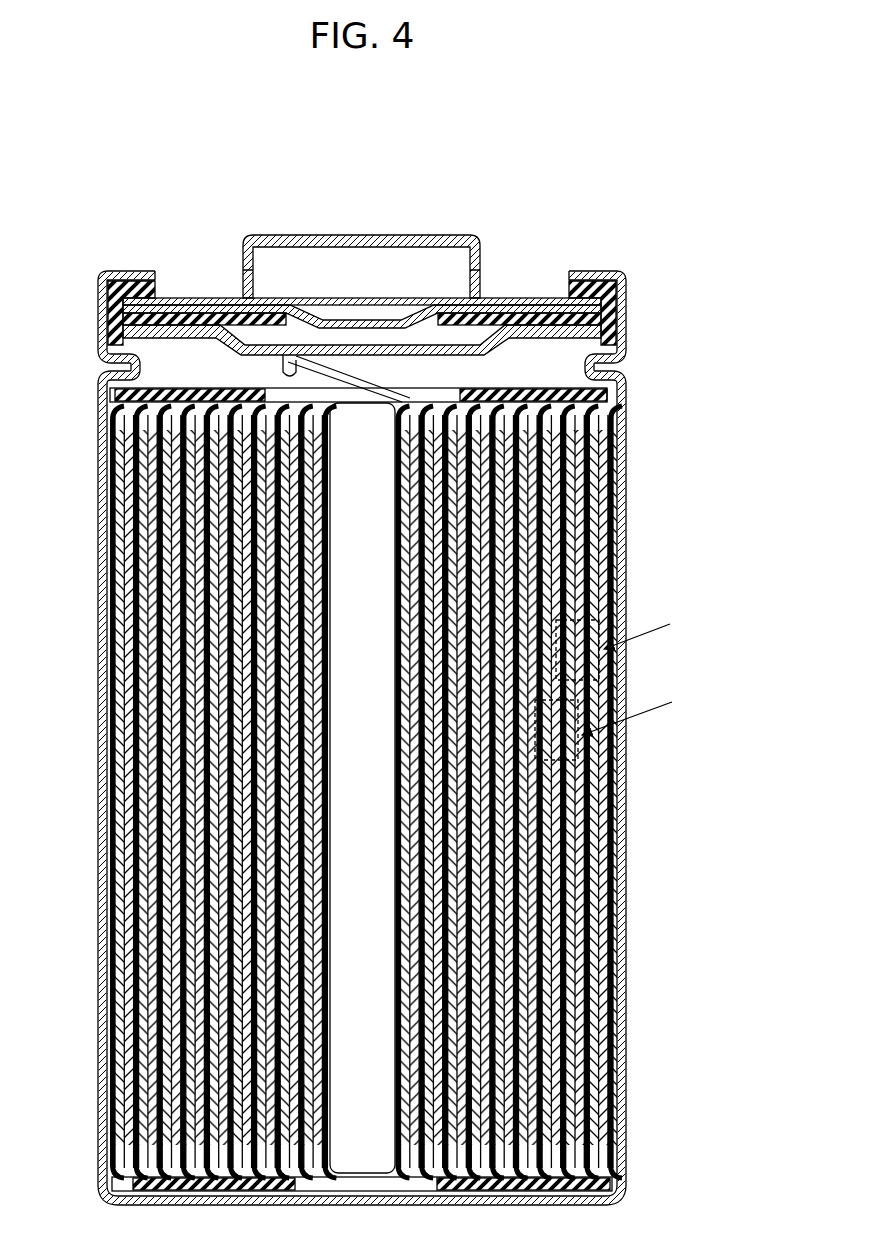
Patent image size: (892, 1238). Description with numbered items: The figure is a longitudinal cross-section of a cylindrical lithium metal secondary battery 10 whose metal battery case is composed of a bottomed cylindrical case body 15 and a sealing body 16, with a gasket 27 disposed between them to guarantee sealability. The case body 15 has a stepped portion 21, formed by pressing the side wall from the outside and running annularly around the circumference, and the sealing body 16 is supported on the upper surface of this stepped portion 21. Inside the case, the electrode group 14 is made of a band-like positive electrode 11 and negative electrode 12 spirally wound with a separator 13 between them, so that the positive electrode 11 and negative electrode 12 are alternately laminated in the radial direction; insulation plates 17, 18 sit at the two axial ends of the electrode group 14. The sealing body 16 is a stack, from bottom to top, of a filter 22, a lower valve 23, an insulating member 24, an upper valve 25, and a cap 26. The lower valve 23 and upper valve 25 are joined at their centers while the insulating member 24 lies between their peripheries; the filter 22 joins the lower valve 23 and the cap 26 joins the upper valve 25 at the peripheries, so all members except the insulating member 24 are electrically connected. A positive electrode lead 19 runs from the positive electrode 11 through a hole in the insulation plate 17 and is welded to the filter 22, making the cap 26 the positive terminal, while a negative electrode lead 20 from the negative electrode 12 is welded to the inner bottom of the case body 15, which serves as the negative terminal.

The lithium metal secondary battery 10 is at (604, 134).
The positive electrode 11 is at (576, 875).
The negative electrode 12 is at (604, 899).
The separator 13 is at (589, 932).
The electrode group 14 is at (430, 790).
The case body 15 is at (624, 268).
The sealing body 16 is at (473, 226).
The insulation plate 17 is at (605, 398).
The insulation plate 18 is at (604, 1181).
The positive electrode lead 19 is at (283, 376).
The negative electrode lead 20 is at (122, 1181).
The stepped portion 21 is at (150, 393).
The filter 22 is at (376, 346).
The lower valve 23 is at (281, 318).
The insulating member 24 is at (175, 297).
The upper valve 25 is at (300, 322).
The cap 26 is at (437, 242).
The gasket 27 is at (614, 310).